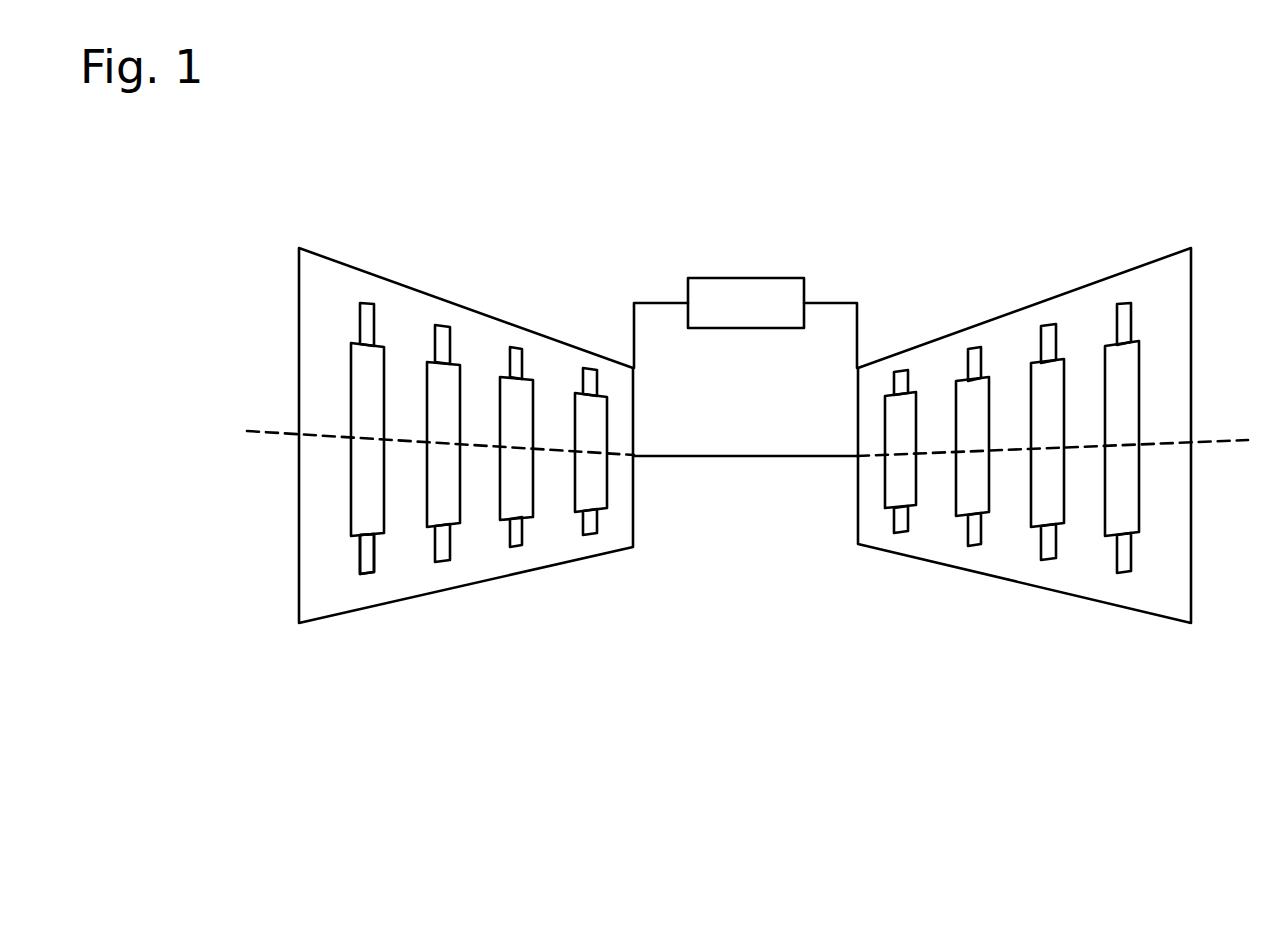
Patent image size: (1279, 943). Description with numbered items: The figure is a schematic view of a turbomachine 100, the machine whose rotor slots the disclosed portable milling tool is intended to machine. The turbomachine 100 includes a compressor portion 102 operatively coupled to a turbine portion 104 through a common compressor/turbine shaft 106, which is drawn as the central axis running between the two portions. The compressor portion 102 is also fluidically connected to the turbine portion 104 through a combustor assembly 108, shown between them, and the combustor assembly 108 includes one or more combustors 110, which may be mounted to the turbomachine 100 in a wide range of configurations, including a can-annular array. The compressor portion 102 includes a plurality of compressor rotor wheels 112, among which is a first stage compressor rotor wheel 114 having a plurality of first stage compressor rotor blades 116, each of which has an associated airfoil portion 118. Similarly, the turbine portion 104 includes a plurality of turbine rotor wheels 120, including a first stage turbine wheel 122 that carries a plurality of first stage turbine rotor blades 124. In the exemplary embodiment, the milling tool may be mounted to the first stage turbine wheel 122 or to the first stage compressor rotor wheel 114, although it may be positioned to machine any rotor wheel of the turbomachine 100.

The turbomachine 100 is at (477, 215).
The compressor portion 102 is at (338, 618).
The turbine portion 104 is at (1108, 608).
The common compressor/turbine shaft 106 is at (691, 458).
The combustor assembly 108 is at (688, 250).
The combustor 110 is at (742, 278).
The compressor rotor wheel 112 is at (413, 580).
The first stage compressor rotor wheel 114 is at (357, 521).
The first stage compressor rotor blade 116 is at (354, 574).
The airfoil portion 118 is at (365, 566).
The turbine rotor wheel 120 is at (1142, 559).
The first stage turbine wheel 122 is at (908, 508).
The first stage turbine rotor blade 124 is at (899, 371).